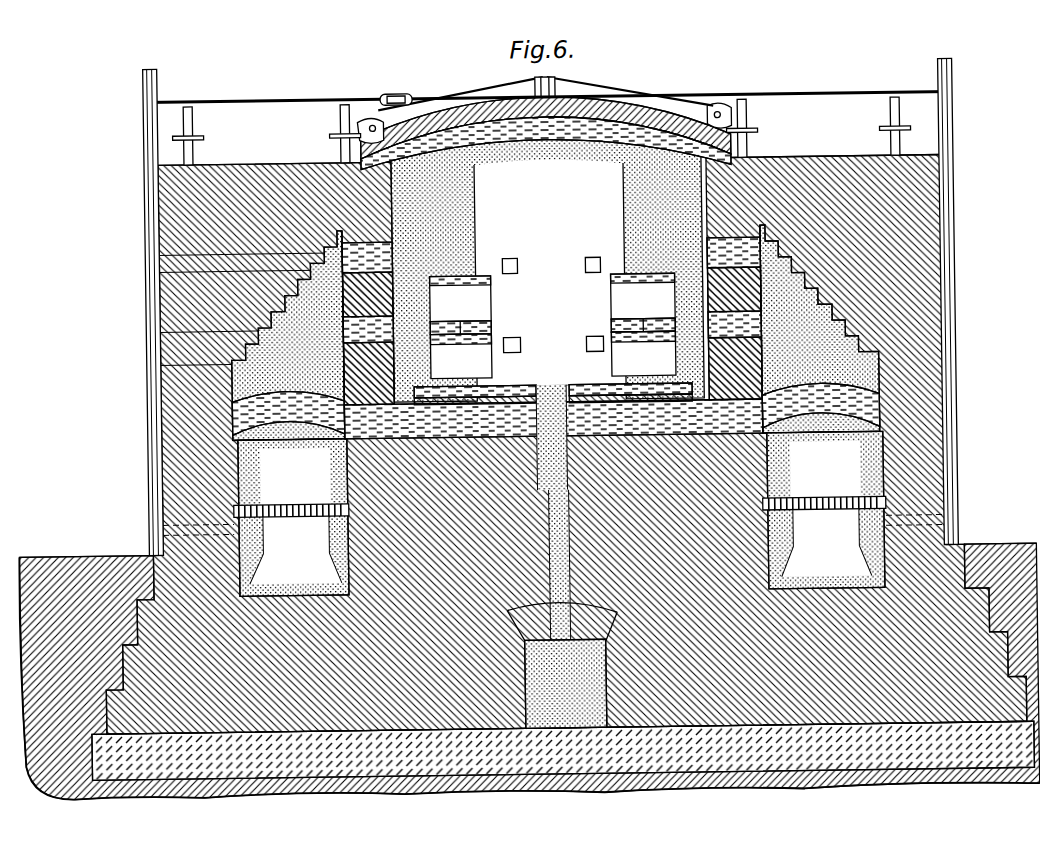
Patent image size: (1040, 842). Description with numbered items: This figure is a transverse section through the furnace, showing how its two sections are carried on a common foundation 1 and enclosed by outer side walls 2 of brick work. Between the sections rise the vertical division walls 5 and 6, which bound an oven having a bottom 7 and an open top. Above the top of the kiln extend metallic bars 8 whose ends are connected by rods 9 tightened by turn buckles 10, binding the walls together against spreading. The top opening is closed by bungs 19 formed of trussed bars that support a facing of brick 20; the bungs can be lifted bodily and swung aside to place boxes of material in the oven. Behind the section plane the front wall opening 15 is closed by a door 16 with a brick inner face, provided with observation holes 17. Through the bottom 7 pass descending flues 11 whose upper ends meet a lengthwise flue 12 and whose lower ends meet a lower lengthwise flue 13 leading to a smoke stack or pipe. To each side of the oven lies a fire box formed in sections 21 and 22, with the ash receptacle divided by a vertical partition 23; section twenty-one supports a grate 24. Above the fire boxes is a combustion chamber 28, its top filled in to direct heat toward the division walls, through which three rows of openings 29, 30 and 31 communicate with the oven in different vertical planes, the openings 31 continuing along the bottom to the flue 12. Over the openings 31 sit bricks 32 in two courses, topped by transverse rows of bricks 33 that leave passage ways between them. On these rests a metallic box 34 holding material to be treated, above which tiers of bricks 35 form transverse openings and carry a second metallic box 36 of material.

The foundation 1 is at (605, 775).
The outer side walls 2 is at (163, 407).
The vertical division wall 5 is at (363, 228).
The vertical division wall 6 is at (738, 228).
The bottom 7 is at (800, 348).
The metallic bars 8 is at (197, 122).
The rods 9 is at (805, 97).
The turn buckles 10 is at (400, 92).
The descending flues 11 is at (567, 548).
The flue 12 is at (562, 455).
The flue 13 is at (540, 700).
The opening 15 is at (665, 115).
The door 16 is at (548, 269).
The observation holes 17 is at (586, 266).
The bungs 19 is at (605, 93).
The facing of brick 20 is at (470, 122).
The fire box section 21 is at (240, 382).
The fire box section 22 is at (258, 368).
The vertical partition 23 is at (260, 592).
The grate 24 is at (233, 510).
The combustion chamber 28 is at (335, 259).
The openings 29 is at (330, 265).
The openings 30 is at (295, 324).
The openings 31 is at (238, 437).
The bricks 32 is at (620, 405).
The bricks 33 is at (640, 386).
The metallic box 34 is at (553, 354).
The bricks 35 is at (613, 326).
The metallic box 36 is at (553, 297).